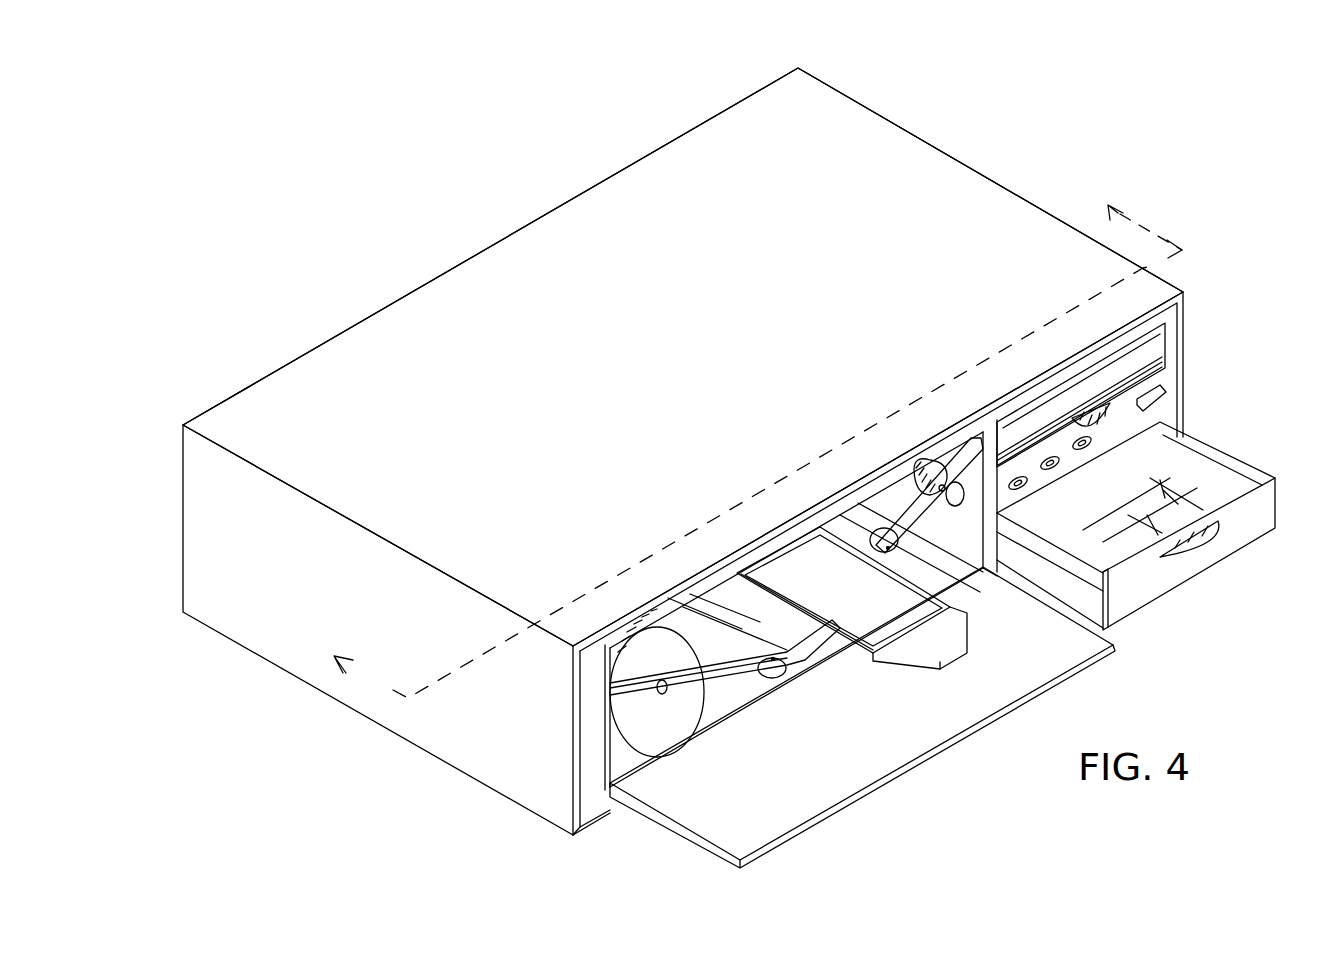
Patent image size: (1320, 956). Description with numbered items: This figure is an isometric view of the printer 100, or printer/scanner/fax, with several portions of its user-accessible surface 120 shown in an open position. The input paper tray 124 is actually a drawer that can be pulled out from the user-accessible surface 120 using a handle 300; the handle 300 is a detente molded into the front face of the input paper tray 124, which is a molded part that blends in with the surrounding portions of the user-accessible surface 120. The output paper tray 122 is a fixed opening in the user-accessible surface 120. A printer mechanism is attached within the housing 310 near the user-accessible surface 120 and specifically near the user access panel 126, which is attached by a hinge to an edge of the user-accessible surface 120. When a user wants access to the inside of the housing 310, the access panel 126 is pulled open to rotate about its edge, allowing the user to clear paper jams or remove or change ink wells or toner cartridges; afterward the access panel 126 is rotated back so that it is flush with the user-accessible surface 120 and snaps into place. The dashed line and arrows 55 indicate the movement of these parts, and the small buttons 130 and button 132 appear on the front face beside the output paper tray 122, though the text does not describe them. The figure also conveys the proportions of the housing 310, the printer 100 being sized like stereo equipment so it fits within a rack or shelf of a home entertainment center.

The printer 100 is at (498, 201).
The housing 310 is at (898, 147).
The movement direction line 55 is at (380, 682).
The user-accessible surface 120 is at (592, 803).
The output paper tray 122 is at (1157, 342).
The input paper tray 124 is at (1137, 597).
The user access panel 126 is at (860, 770).
The control buttons 130 is at (1082, 438).
The eject button 132 is at (1155, 403).
The handle 300 is at (1198, 538).